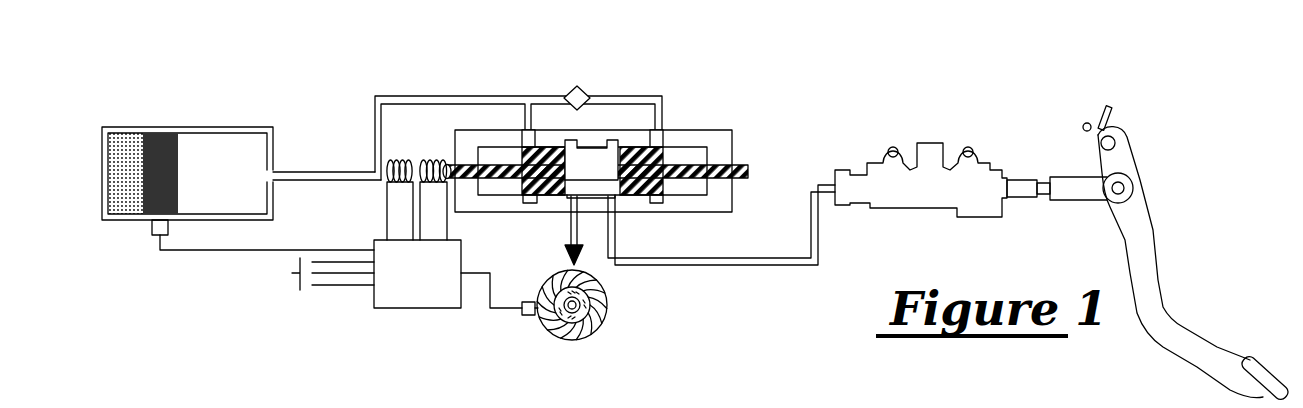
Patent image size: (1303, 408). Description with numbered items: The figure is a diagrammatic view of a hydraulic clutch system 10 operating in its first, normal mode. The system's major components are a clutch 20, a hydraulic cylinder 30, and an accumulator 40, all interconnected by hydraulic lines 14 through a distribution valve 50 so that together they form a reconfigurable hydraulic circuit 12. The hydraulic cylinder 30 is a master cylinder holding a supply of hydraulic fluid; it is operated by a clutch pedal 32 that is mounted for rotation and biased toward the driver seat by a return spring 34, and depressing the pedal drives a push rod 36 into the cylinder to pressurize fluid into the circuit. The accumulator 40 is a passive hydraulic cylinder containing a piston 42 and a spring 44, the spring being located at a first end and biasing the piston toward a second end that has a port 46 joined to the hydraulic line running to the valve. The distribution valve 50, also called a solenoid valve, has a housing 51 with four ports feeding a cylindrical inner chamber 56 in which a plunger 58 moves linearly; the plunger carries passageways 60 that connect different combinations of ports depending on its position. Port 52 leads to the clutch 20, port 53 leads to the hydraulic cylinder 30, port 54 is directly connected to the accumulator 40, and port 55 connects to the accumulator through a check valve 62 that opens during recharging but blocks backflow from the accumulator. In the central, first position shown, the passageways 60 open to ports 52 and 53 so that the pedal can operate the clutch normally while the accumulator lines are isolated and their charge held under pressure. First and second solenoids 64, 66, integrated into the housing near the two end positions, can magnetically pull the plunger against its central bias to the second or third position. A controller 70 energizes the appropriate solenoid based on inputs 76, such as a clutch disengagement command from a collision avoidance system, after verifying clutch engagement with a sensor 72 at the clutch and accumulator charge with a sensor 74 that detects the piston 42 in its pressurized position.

The hydraulic clutch system 10 is at (1182, 72).
The hydraulic circuit 12 is at (348, 64).
The hydraulic lines 14 is at (394, 96).
The clutch 20 is at (606, 307).
The hydraulic cylinder 30 is at (912, 217).
The clutch pedal 32 is at (1232, 272).
The return spring 34 is at (1083, 124).
The push rod 36 is at (1043, 200).
The accumulator 40 is at (220, 127).
The piston 42 is at (168, 150).
The spring 44 is at (128, 150).
The port 46 is at (274, 177).
The distribution valve 50 is at (616, 158).
The housing 51 is at (735, 200).
The port 52 is at (571, 214).
The port 53 is at (614, 222).
The port 54 is at (525, 130).
The port 55 is at (665, 130).
The inner chamber 56 is at (702, 158).
The plunger 58 is at (665, 200).
The passageways 60 is at (600, 146).
The check valve 62 is at (586, 90).
The first solenoid 64 is at (396, 160).
The second solenoid 66 is at (433, 160).
The controller 70 is at (430, 287).
The sensor 72 is at (522, 316).
The sensor 74 is at (152, 233).
The inputs 76 is at (318, 274).